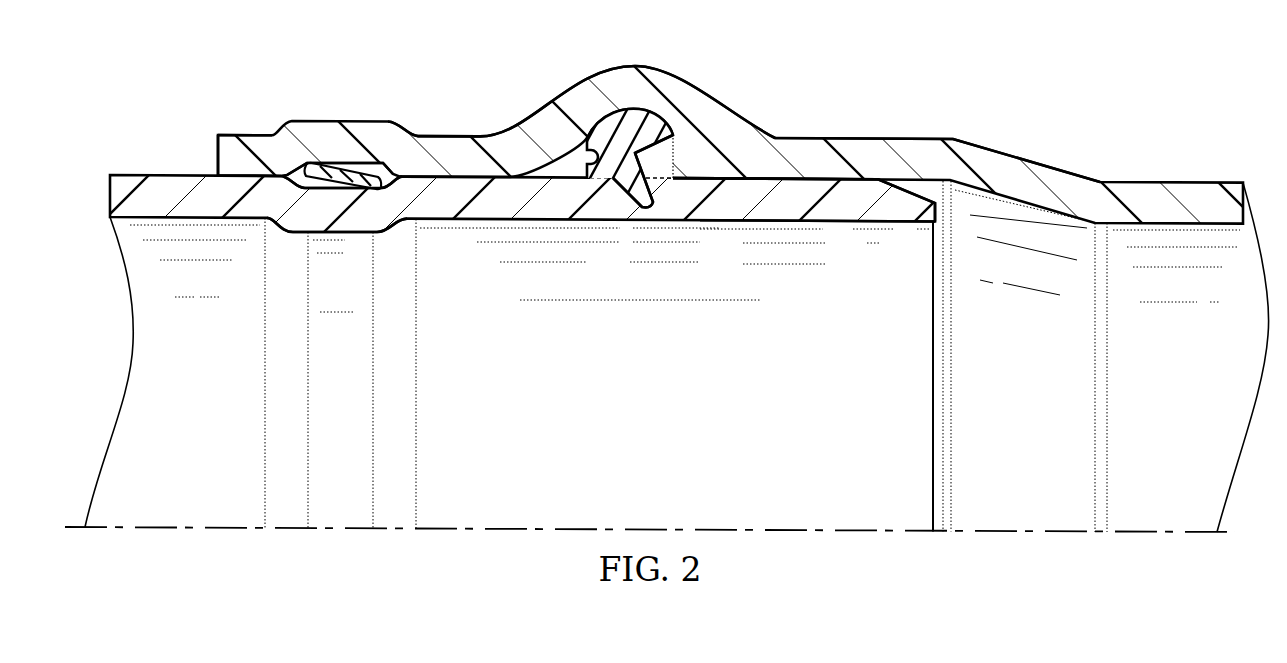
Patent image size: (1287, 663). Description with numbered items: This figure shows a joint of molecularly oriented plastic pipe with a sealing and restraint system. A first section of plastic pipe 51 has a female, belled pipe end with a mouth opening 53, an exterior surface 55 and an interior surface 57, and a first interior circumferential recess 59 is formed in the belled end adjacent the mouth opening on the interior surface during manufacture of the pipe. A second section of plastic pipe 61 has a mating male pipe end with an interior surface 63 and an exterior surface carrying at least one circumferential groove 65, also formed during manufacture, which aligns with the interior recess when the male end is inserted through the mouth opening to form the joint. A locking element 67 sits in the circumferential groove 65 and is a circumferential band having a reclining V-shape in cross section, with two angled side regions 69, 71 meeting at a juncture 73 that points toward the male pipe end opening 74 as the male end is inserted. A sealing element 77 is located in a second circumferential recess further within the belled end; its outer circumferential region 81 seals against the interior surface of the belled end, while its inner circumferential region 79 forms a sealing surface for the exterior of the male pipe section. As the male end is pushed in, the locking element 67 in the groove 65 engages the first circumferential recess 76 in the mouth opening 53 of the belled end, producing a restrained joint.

The first section of plastic pipe 51 is at (447, 140).
The mouth opening 53 is at (218, 186).
The exterior surface 55 is at (545, 112).
The interior surface 57 is at (840, 190).
The first interior circumferential recess 59 is at (712, 194).
The second section of plastic pipe 61 is at (840, 215).
The interior surface 63 is at (712, 178).
The circumferential groove 65 is at (298, 183).
The locking element 67 is at (338, 186).
The angled side region 69 is at (336, 165).
The angled side region 71 is at (291, 173).
The juncture 73 is at (400, 222).
The male pipe end opening 74 is at (897, 221).
The first circumferential recess 76 is at (390, 156).
The sealing element 77 is at (636, 118).
The inner circumferential region 79 is at (618, 207).
The outer circumferential region 81 is at (668, 128).